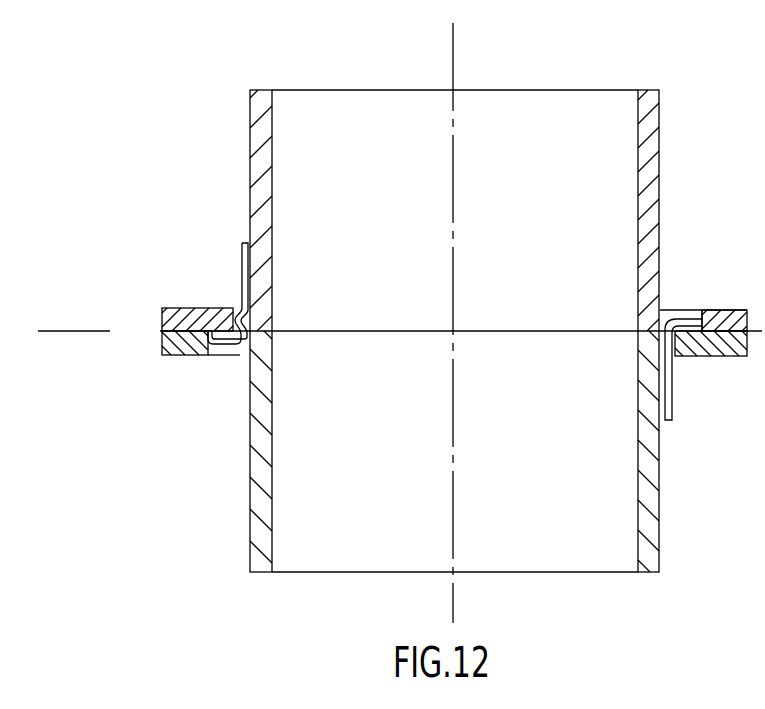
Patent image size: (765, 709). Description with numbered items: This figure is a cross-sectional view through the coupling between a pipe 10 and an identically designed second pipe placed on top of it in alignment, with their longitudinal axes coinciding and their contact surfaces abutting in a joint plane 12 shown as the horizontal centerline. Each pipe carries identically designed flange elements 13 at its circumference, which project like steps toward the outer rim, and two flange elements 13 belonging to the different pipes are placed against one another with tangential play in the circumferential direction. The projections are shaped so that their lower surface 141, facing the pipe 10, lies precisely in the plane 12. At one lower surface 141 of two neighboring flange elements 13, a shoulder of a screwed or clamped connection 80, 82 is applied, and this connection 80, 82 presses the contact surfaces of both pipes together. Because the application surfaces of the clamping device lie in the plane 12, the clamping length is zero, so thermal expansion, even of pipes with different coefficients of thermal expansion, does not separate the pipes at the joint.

The pipe 10 is at (650, 180).
The joint plane 12 is at (64, 328).
The flange element 13 is at (230, 344).
The screwed or clamped connection 80 is at (173, 308).
The screwed or clamped connection 82 is at (164, 356).
The lower surface 141 is at (221, 336).